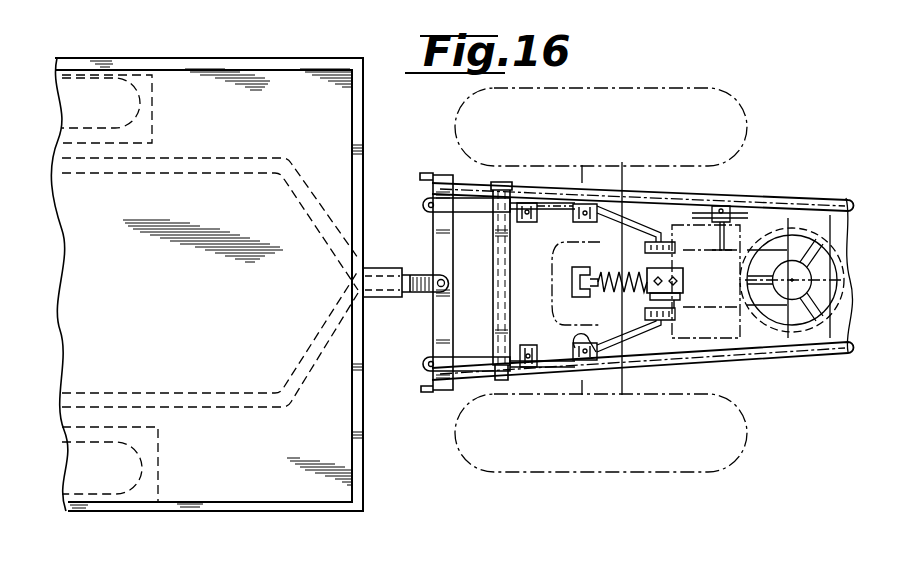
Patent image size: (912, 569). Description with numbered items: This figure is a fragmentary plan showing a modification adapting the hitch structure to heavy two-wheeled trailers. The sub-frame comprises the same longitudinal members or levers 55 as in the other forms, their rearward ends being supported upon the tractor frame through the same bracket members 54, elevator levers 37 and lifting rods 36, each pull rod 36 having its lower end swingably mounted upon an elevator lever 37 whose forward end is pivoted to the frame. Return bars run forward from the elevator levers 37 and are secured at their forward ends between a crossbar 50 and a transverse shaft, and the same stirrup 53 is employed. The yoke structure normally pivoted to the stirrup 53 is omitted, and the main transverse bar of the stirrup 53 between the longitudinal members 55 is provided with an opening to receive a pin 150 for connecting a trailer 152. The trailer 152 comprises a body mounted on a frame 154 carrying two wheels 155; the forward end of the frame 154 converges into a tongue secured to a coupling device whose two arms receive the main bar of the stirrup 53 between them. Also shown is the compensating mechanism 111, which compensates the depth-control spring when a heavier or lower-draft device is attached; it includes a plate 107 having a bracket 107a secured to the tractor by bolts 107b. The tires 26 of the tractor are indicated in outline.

The trailer 152 is at (263, 80).
The frame 154 is at (254, 410).
The wheels 155 is at (120, 487).
The pin 150 is at (441, 291).
The stirrup 53 is at (437, 343).
The crossbar 50 is at (503, 317).
The bracket members 54 is at (538, 196).
The pull rods 36 is at (562, 200).
The elevator levers 37 is at (519, 203).
The compensating mechanism 111 is at (617, 252).
The plate 107 is at (676, 310).
The bracket 107a is at (684, 291).
The bolts 107b is at (676, 279).
The longitudinal members 55 is at (794, 203).
The wheel 26 is at (742, 107).